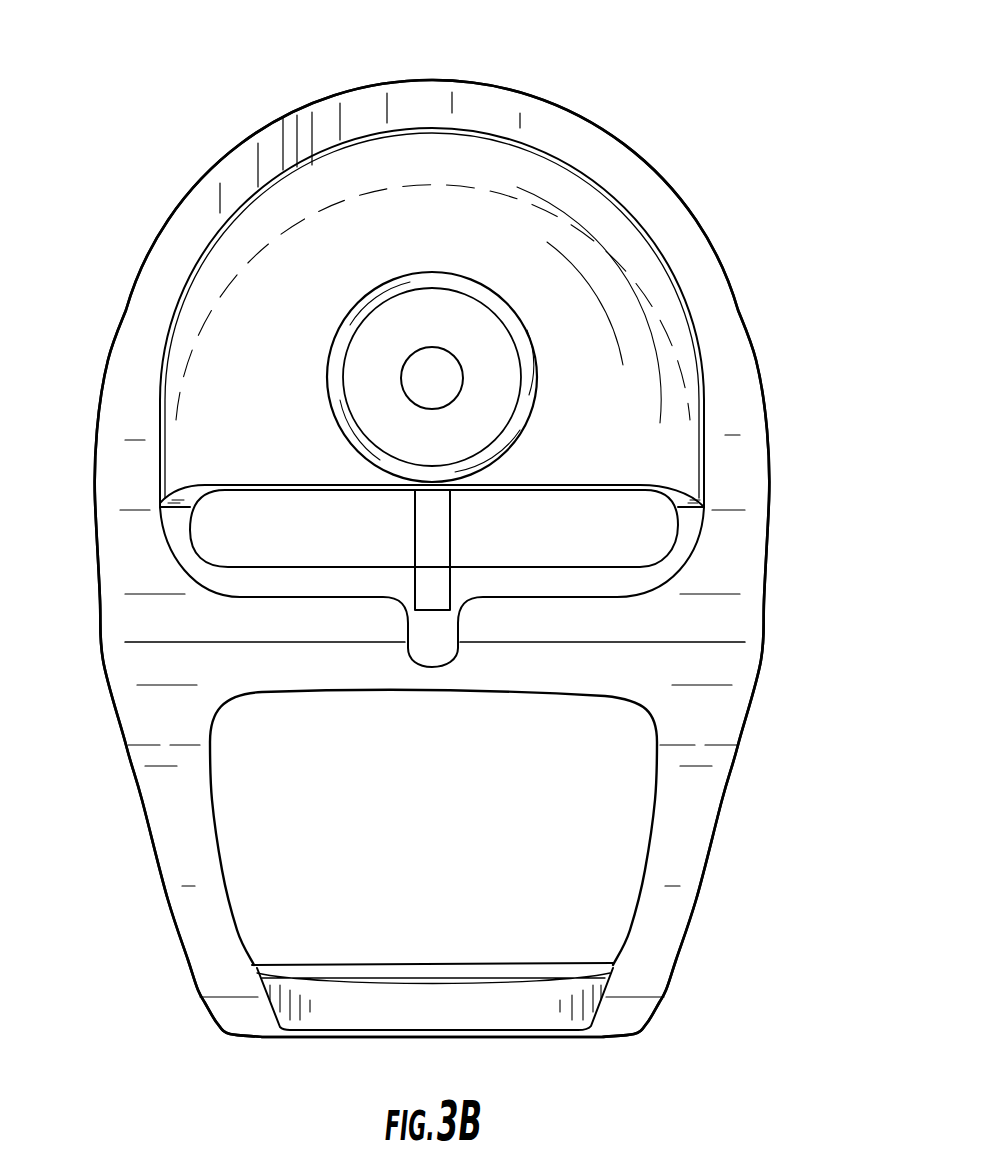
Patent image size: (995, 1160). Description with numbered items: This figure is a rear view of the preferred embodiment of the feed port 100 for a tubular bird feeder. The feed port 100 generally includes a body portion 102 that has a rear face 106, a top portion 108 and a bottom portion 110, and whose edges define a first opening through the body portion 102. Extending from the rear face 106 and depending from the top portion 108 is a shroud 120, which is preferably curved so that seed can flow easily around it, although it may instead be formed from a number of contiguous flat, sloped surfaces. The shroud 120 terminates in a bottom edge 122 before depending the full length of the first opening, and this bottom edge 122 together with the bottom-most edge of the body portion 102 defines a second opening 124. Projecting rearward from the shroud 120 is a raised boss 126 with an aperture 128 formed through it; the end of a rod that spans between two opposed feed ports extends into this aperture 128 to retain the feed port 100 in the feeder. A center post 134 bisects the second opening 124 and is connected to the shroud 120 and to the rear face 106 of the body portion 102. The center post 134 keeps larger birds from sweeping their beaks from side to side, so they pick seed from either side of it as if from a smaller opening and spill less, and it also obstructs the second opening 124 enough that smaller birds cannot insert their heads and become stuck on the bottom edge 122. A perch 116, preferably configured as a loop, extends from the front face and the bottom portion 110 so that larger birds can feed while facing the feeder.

The feed port 100 is at (186, 44).
The body portion 102 is at (95, 466).
The top portion 108 is at (452, 80).
The shroud 120 is at (292, 170).
The raised boss 126 is at (468, 312).
The aperture 128 is at (400, 372).
The bottom edge 122 is at (685, 500).
The second opening 124 is at (620, 531).
The center post 134 is at (415, 523).
The rear face 106 is at (350, 662).
The bottom portion 110 is at (478, 695).
The perch 116 is at (337, 1022).